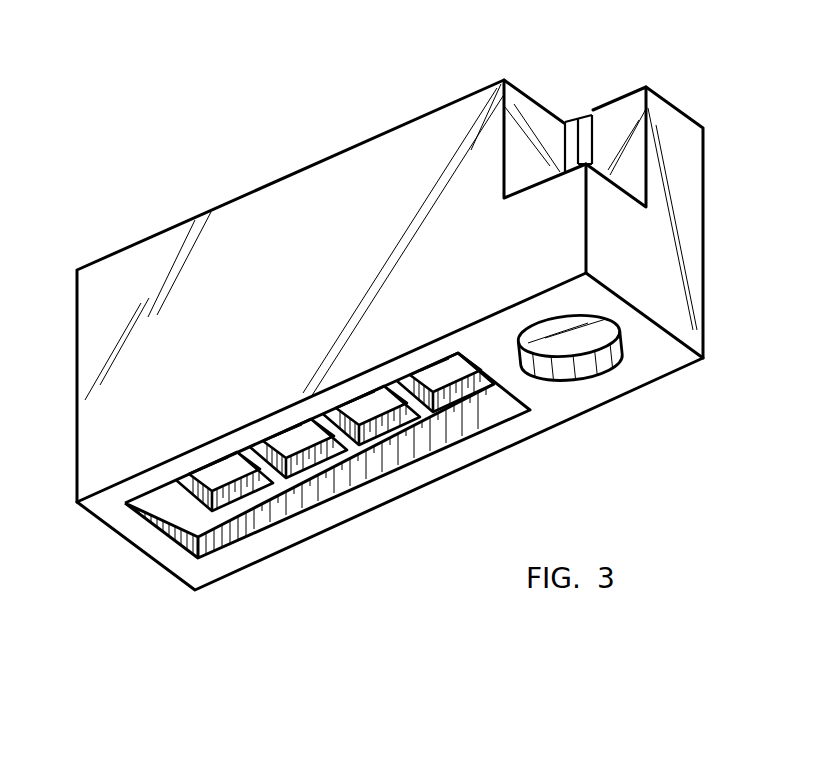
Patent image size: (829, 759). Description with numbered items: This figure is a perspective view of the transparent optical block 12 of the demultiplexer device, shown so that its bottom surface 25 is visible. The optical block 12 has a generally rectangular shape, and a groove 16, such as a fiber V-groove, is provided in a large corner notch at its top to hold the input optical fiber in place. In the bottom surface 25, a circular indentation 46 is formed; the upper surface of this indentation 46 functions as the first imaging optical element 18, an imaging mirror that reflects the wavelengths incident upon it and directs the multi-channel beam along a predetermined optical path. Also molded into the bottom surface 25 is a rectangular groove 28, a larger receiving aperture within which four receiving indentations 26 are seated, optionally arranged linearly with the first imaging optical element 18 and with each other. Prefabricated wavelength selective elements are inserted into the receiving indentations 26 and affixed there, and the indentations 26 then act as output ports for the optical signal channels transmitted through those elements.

The optical block 12 is at (206, 185).
The groove 16 is at (584, 128).
The first imaging optical element 18 is at (572, 342).
The bottom surface 25 is at (560, 403).
The receiving indentations 26 is at (364, 430).
The rectangular groove 28 is at (257, 531).
The circular indentation 46 is at (605, 355).